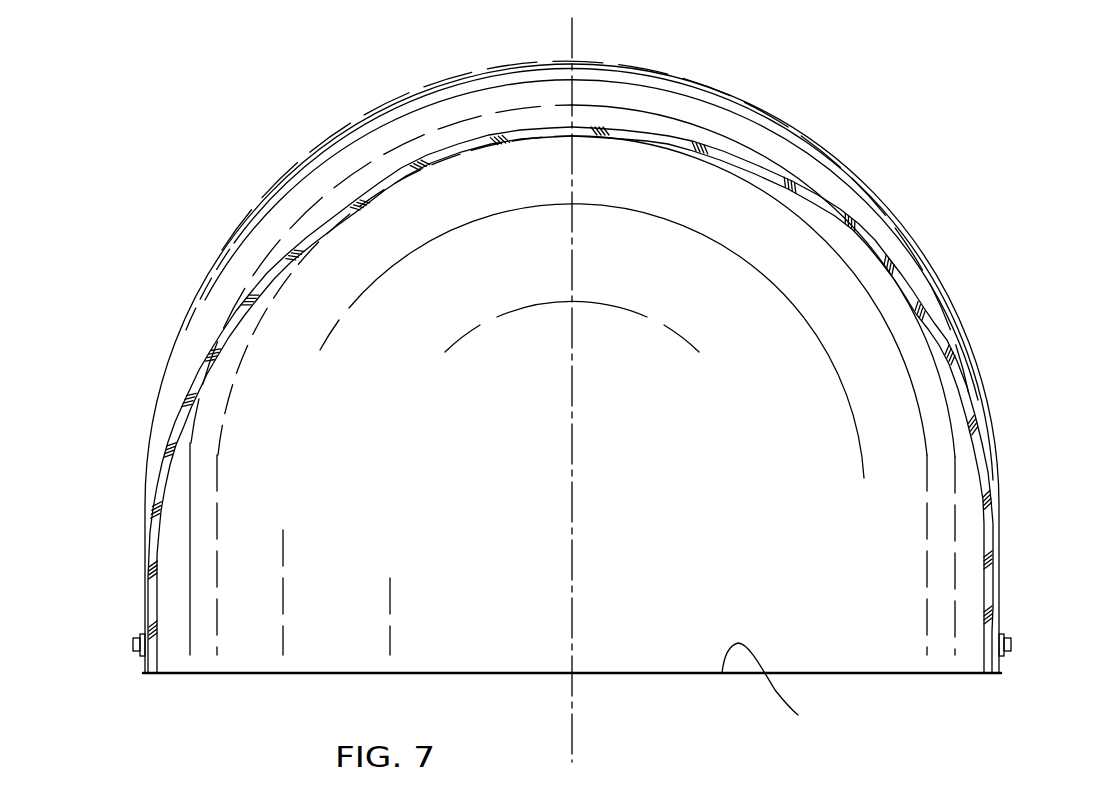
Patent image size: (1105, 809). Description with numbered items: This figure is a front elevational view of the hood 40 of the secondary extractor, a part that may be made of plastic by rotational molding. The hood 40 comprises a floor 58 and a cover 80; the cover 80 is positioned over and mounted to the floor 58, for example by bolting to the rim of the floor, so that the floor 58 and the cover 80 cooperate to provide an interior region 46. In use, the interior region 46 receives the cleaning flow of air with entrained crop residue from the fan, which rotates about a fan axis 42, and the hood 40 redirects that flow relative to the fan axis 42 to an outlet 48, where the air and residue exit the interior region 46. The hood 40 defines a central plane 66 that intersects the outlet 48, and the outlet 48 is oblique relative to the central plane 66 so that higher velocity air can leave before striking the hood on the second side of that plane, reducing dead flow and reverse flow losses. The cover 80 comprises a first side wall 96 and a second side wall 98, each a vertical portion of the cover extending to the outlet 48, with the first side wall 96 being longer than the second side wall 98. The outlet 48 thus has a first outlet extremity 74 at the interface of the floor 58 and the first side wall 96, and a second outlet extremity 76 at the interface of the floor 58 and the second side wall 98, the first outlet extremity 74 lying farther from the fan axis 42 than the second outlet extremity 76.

The hood 40 is at (968, 188).
The fan axis 42 is at (574, 481).
The central plane 66 is at (592, 341).
The interior region 46 is at (358, 210).
The cover 80 is at (337, 190).
The first outlet extremity 74 is at (163, 672).
The second outlet extremity 76 is at (982, 671).
The outlet 48 is at (463, 670).
The floor 58 is at (775, 691).
The first side wall 96 is at (143, 612).
The second side wall 98 is at (1000, 612).